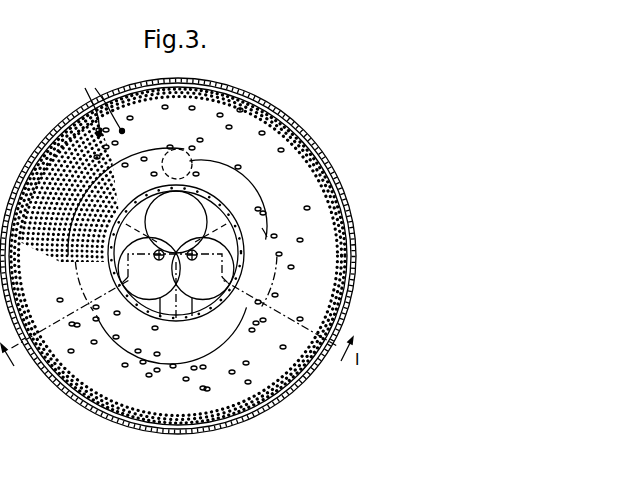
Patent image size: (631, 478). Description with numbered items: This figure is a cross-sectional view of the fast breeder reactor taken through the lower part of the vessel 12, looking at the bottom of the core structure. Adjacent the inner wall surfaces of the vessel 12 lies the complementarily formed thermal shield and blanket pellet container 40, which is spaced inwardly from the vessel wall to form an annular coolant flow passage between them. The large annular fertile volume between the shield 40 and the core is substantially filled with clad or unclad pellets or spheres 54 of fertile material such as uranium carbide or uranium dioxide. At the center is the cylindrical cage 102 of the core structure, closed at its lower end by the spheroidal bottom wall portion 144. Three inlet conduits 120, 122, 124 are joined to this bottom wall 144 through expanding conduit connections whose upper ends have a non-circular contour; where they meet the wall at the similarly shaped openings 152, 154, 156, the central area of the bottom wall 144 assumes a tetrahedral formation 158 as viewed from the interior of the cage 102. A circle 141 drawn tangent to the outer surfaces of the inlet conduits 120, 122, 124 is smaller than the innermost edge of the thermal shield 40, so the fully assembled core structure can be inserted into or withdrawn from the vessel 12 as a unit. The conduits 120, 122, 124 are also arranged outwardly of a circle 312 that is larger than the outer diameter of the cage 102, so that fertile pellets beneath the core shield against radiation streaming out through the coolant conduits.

The vessel 12 is at (267, 404).
The thermal shield and blanket pellet container 40 is at (213, 422).
The pellets or spheres 54 is at (100, 105).
The cylindrical cage 102 is at (235, 331).
The inlet conduit 120 is at (99, 318).
The inlet conduit 122 is at (177, 149).
The inlet conduit 124 is at (270, 283).
The circle 141 is at (265, 192).
The spheroidal bottom wall portion 144 is at (152, 193).
The opening 152 is at (152, 316).
The opening 154 is at (228, 212).
The opening 156 is at (193, 316).
The tetrahedral formation 158 is at (176, 253).
The circle 312 is at (267, 237).